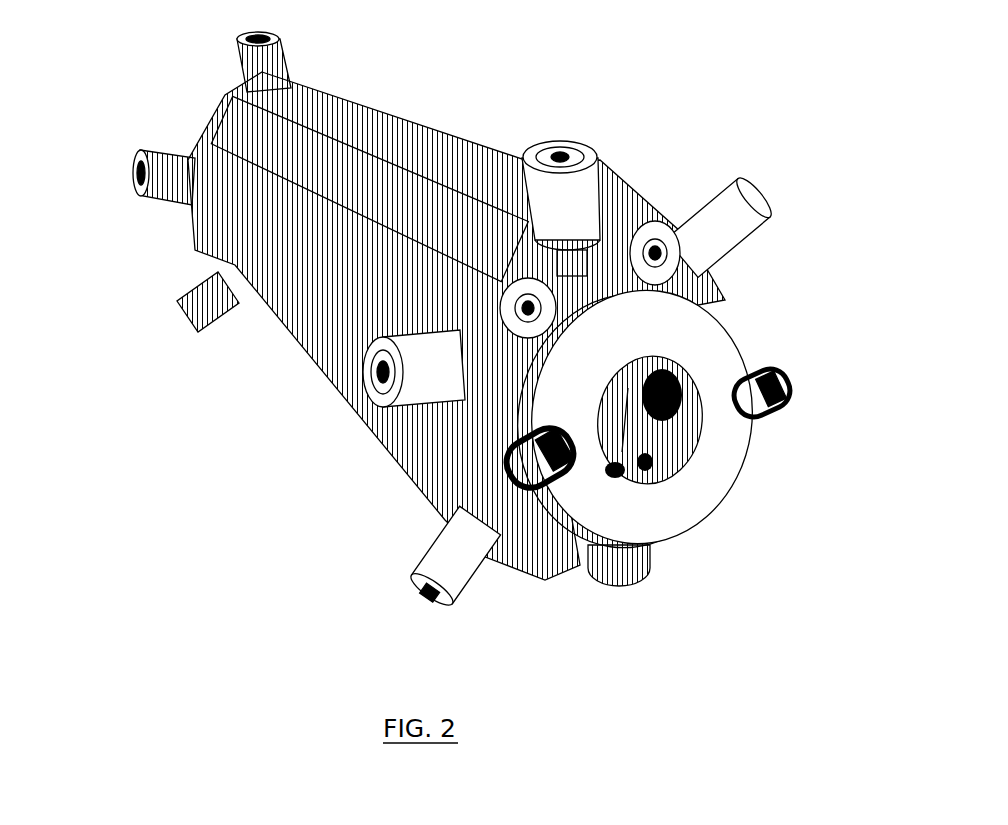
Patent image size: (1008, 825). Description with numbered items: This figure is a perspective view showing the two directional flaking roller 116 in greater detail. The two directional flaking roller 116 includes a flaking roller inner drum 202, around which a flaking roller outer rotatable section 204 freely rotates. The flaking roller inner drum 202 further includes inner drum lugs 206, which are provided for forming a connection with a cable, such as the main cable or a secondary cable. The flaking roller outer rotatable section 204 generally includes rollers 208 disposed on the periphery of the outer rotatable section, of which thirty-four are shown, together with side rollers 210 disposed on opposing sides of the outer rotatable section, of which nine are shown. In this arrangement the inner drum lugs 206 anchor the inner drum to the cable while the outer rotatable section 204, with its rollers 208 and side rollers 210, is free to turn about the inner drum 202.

The two directional flaking roller 116 is at (506, 412).
The flaking roller inner drum 202 is at (690, 482).
The flaking roller outer rotatable section 204 is at (620, 262).
The inner drum lugs 206 is at (783, 382).
The rollers 208 is at (437, 124).
The side rollers 210 is at (152, 200).